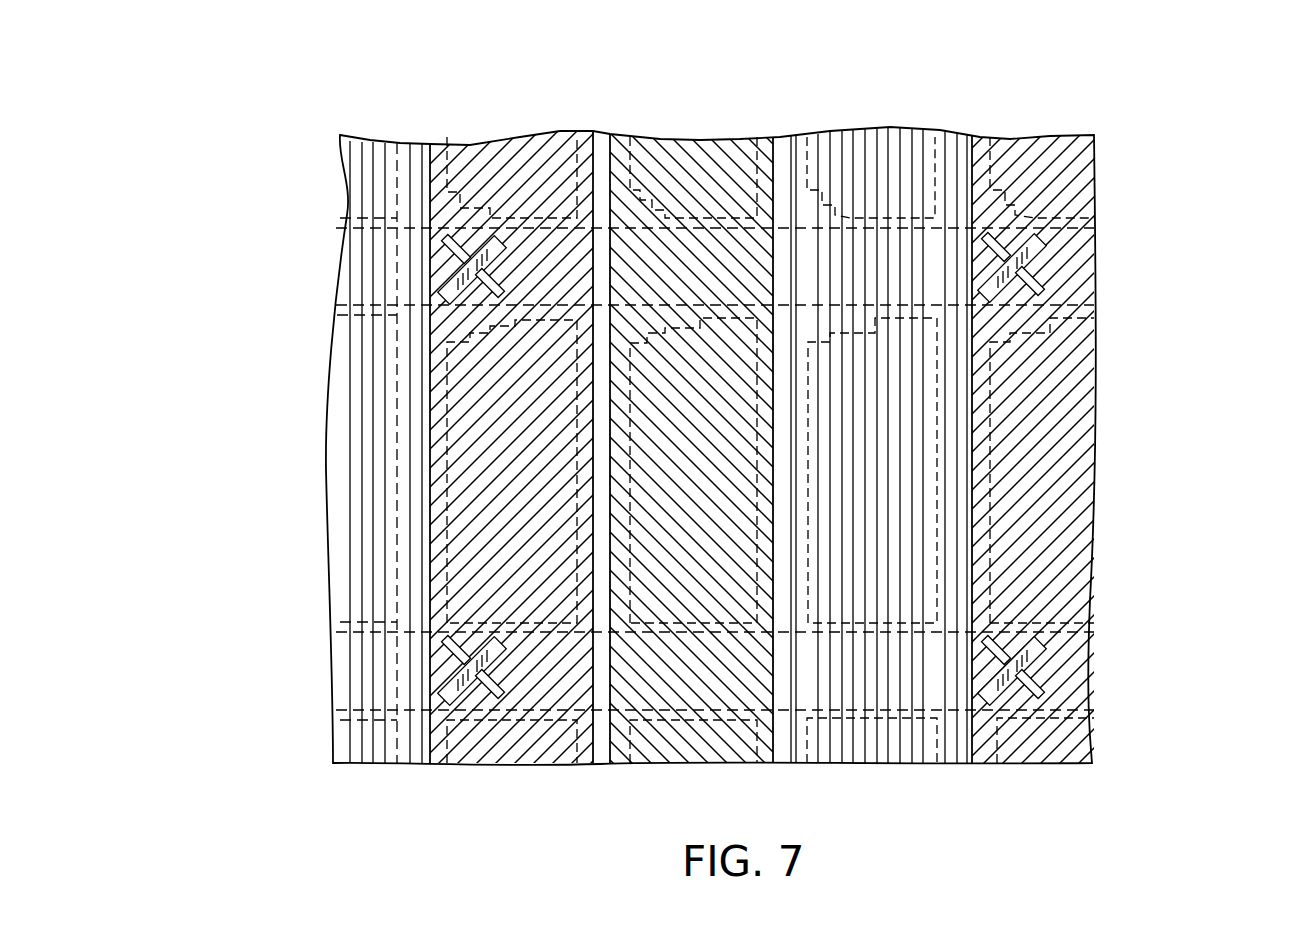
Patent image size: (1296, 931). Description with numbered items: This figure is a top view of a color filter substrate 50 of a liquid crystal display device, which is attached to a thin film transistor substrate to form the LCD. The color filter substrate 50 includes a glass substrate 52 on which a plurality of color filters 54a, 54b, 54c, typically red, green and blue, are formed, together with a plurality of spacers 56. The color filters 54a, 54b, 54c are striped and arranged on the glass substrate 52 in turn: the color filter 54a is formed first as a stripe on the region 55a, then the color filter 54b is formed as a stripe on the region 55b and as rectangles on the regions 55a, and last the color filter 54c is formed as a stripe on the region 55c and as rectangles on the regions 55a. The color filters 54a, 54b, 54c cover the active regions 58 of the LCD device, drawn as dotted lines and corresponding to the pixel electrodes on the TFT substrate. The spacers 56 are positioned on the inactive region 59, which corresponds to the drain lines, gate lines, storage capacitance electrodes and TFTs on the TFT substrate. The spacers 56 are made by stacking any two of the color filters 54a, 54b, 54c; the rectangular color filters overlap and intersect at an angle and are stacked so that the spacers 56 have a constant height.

The color filter substrate 50 is at (1213, 123).
The glass substrate 52 is at (975, 790).
The color filter 54a is at (497, 160).
The color filter 54b is at (415, 225).
The color filter 54c is at (521, 217).
The region 55a is at (593, 765).
The region 55b is at (773, 765).
The region 55c is at (955, 765).
The spacer 56 is at (1010, 207).
The active region 58 is at (445, 472).
The inactive region 59 is at (440, 268).